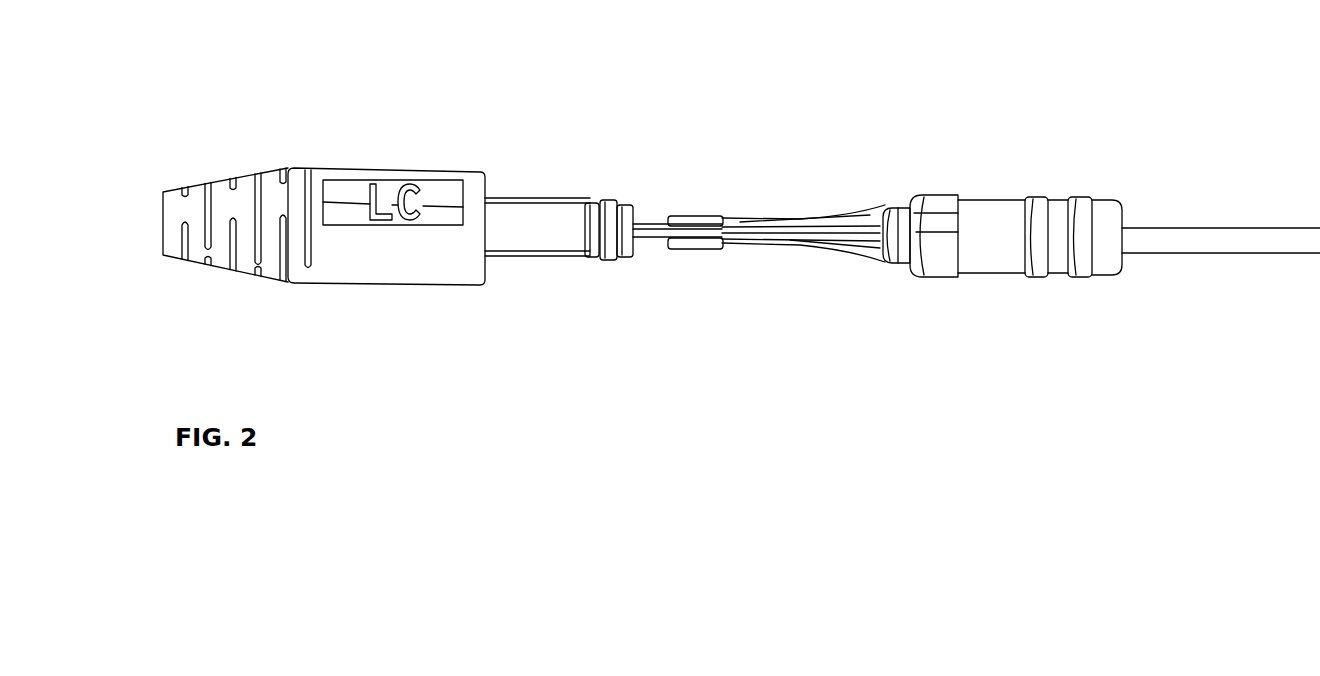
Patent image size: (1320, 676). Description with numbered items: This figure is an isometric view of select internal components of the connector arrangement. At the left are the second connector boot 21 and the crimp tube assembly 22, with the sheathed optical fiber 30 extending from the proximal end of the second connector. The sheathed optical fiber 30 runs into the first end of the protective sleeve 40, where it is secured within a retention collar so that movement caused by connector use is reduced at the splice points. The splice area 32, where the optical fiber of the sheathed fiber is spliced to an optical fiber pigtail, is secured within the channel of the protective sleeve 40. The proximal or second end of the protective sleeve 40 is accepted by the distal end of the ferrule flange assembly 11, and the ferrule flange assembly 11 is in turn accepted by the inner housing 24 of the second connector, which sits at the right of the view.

The ferrule flange assembly 11 is at (940, 192).
The second connector boot 21 is at (310, 161).
The crimp tube assembly 22 is at (559, 229).
The inner housing 24 is at (1139, 237).
The sheathed optical fiber 30 is at (654, 240).
The splice area 32 is at (777, 230).
The protective sleeve 40 is at (873, 258).